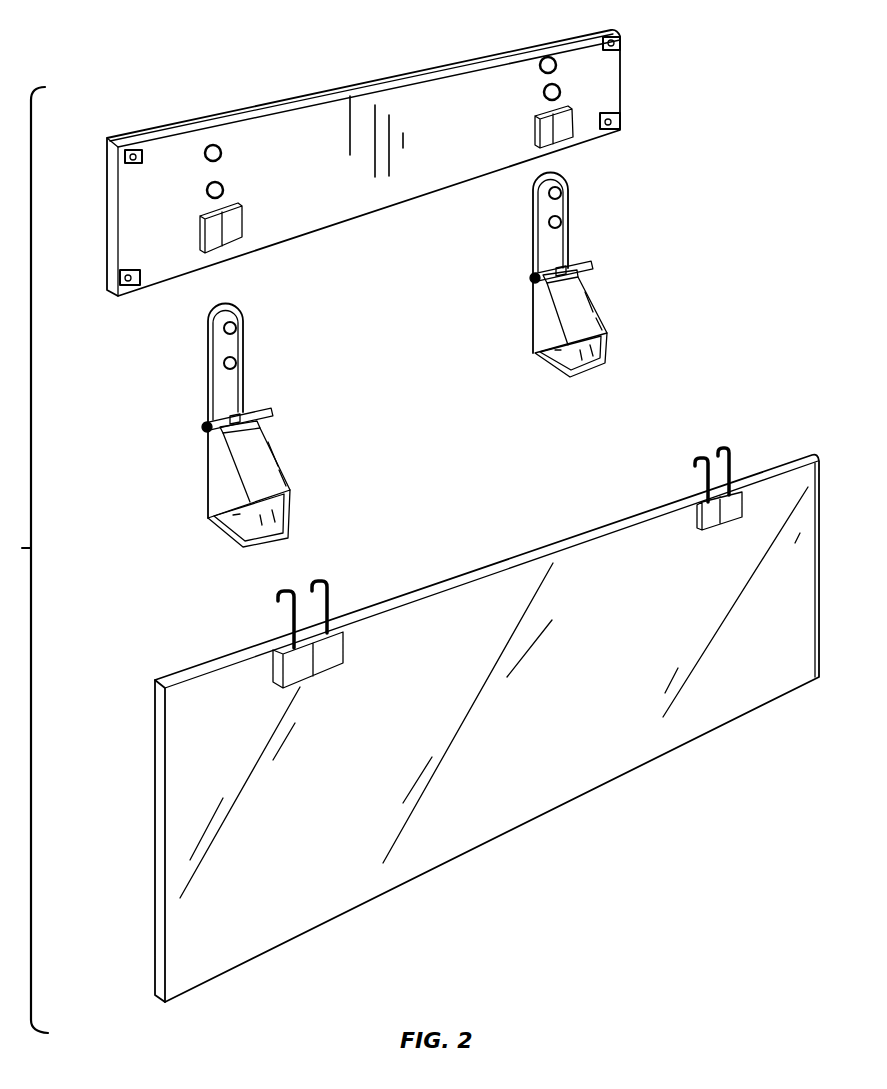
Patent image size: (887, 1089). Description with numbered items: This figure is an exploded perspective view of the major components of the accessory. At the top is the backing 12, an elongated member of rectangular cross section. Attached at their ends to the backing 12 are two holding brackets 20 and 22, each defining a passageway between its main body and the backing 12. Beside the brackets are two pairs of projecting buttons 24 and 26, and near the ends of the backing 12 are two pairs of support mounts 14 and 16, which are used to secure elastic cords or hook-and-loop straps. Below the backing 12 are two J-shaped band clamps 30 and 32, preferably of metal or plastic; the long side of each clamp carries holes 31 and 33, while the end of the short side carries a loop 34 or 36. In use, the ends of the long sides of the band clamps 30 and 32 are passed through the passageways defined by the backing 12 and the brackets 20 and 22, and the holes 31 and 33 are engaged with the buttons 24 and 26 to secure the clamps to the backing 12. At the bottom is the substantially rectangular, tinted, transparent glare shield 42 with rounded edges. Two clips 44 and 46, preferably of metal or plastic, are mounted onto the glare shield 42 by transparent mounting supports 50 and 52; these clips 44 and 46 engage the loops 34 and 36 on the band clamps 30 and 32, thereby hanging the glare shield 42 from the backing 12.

The backing 12 is at (315, 93).
The support mounts 14 is at (118, 250).
The support mounts 16 is at (622, 110).
The holding bracket 20 is at (238, 234).
The holding bracket 22 is at (536, 130).
The projecting buttons 24 is at (226, 185).
The projecting buttons 26 is at (543, 88).
The J-shaped band clamp 30 is at (248, 426).
The holes 31 is at (242, 360).
The J-shaped band clamp 32 is at (573, 275).
The holes 33 is at (566, 217).
The loop 34 is at (276, 411).
The loop 36 is at (596, 265).
The glare shield 42 is at (557, 800).
The clip 44 is at (328, 597).
The clip 46 is at (700, 482).
The mounting support 50 is at (330, 665).
The mounting support 52 is at (710, 531).